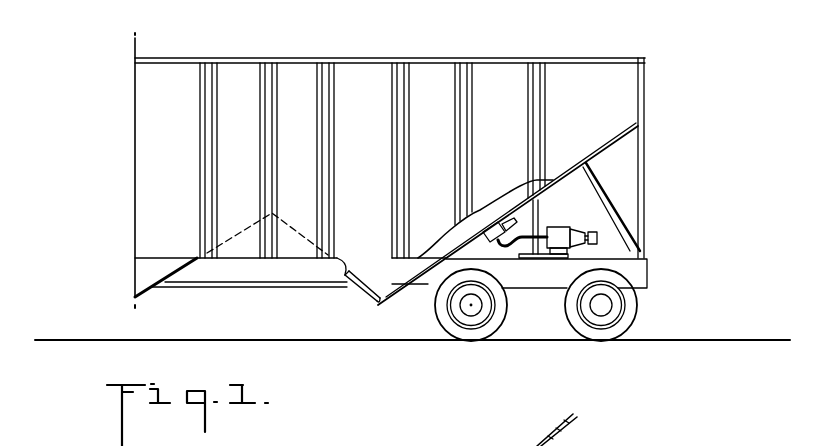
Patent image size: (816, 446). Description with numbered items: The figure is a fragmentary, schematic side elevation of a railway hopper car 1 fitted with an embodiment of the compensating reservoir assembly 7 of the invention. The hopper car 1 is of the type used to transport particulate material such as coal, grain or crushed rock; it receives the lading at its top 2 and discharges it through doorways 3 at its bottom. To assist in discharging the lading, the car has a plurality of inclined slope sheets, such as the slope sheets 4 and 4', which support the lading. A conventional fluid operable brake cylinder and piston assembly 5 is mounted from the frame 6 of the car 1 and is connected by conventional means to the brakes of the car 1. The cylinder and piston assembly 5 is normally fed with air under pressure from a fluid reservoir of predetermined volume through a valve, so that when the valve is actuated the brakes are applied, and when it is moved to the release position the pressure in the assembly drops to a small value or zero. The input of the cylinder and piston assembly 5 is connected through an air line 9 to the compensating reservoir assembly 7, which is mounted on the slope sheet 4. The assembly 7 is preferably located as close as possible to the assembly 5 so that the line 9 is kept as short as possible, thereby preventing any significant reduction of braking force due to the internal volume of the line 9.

The railway hopper car 1 is at (652, 99).
The top 2 is at (521, 58).
The doorways 3 is at (353, 299).
The slope sheet 4 is at (509, 213).
The slope sheet 4' is at (166, 258).
The fluid operable brake cylinder and piston assembly 5 is at (565, 225).
The frame 6 is at (650, 281).
The compensating reservoir assembly 7 is at (488, 220).
The air line 9 is at (501, 246).